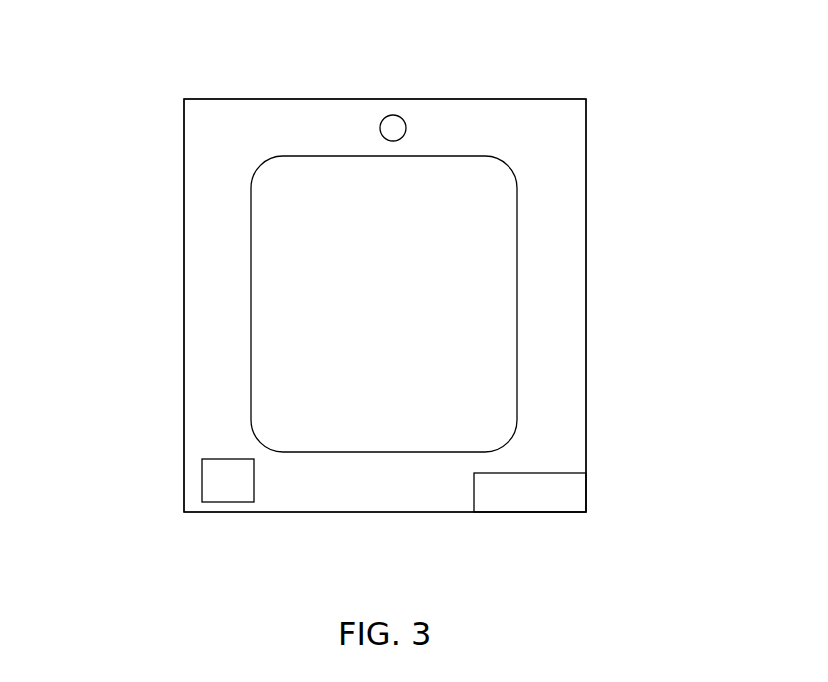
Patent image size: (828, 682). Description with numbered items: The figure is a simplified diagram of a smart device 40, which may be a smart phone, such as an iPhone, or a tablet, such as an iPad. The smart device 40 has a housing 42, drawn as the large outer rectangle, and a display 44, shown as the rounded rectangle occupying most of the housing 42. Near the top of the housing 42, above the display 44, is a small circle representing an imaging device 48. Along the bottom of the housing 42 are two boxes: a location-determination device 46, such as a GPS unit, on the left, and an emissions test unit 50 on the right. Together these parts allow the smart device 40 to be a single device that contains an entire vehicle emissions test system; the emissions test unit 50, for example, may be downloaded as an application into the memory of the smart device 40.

The smart device 40 is at (141, 78).
The housing 42 is at (587, 120).
The display 44 is at (368, 311).
The location-determination device 46 is at (215, 491).
The imaging device 48 is at (394, 115).
The emissions test unit 50 is at (517, 500).